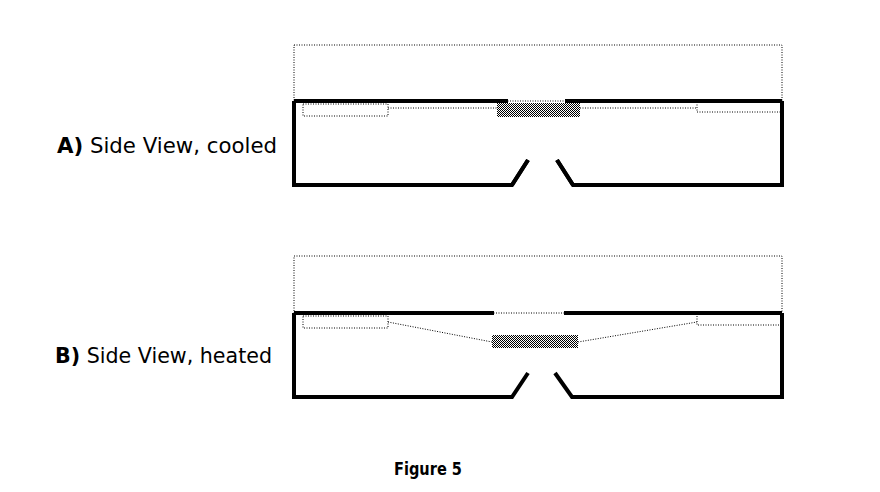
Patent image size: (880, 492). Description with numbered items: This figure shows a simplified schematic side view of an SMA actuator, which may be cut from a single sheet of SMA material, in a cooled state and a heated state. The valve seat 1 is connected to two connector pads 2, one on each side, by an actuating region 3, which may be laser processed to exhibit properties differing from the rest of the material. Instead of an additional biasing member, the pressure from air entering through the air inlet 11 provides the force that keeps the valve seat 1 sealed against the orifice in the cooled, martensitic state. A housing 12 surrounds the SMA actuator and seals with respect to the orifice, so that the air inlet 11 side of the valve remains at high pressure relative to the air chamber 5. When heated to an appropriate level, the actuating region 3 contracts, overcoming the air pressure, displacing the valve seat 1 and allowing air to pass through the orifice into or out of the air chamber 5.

The valve seat 1 is at (515, 118).
The connector pads 2 is at (738, 108).
The actuating region 3 is at (620, 111).
The air chamber 5 is at (485, 62).
The air inlet 11 is at (545, 170).
The housing 12 is at (386, 187).